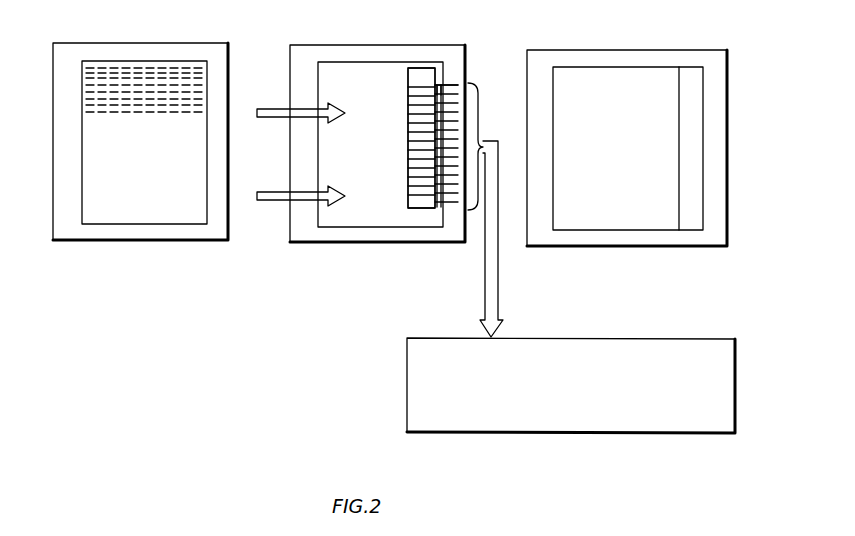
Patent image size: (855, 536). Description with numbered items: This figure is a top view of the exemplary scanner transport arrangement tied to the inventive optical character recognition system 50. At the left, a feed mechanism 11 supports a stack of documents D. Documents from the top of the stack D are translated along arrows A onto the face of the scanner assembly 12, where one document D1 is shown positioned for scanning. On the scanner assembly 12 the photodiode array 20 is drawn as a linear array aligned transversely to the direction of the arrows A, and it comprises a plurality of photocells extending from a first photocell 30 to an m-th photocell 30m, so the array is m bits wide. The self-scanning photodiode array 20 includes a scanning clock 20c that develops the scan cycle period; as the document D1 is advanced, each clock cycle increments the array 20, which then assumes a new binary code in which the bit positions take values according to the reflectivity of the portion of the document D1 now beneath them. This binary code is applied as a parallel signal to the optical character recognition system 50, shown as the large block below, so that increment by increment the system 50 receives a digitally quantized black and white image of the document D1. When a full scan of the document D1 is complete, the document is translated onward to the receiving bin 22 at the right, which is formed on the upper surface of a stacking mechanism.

The feed mechanism 11 is at (82, 44).
The documents D is at (137, 62).
The scanner assembly 12 is at (341, 242).
The document D1 is at (361, 52).
The arrows A is at (262, 108).
The photodiode array 20 is at (412, 217).
The scanning clock 20c is at (415, 72).
The photocell 30 is at (437, 208).
The photocell 30m is at (440, 85).
The receiving bin 22 is at (634, 241).
The optical character recognition system 50 is at (738, 349).